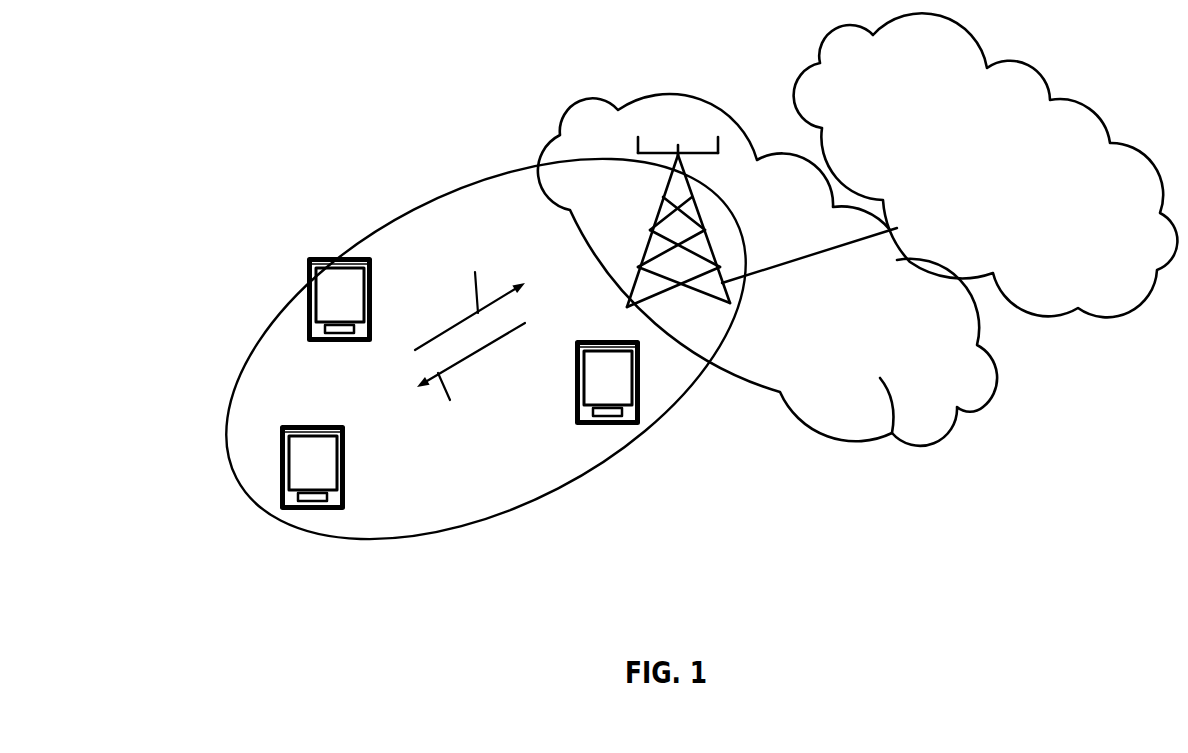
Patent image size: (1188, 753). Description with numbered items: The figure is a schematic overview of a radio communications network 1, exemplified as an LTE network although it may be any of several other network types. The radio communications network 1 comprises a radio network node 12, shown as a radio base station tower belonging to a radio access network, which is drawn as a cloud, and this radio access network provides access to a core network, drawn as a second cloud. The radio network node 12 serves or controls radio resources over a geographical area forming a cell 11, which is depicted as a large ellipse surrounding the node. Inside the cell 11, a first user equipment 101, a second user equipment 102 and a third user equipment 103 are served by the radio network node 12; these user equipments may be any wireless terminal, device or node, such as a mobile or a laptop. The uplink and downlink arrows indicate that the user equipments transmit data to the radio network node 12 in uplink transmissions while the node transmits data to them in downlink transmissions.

The radio communications network 1 is at (322, 139).
The cell 11 is at (546, 232).
The radio network node 12 is at (718, 290).
The first user equipment 101 is at (308, 477).
The second user equipment 102 is at (333, 308).
The third user equipment 103 is at (632, 408).